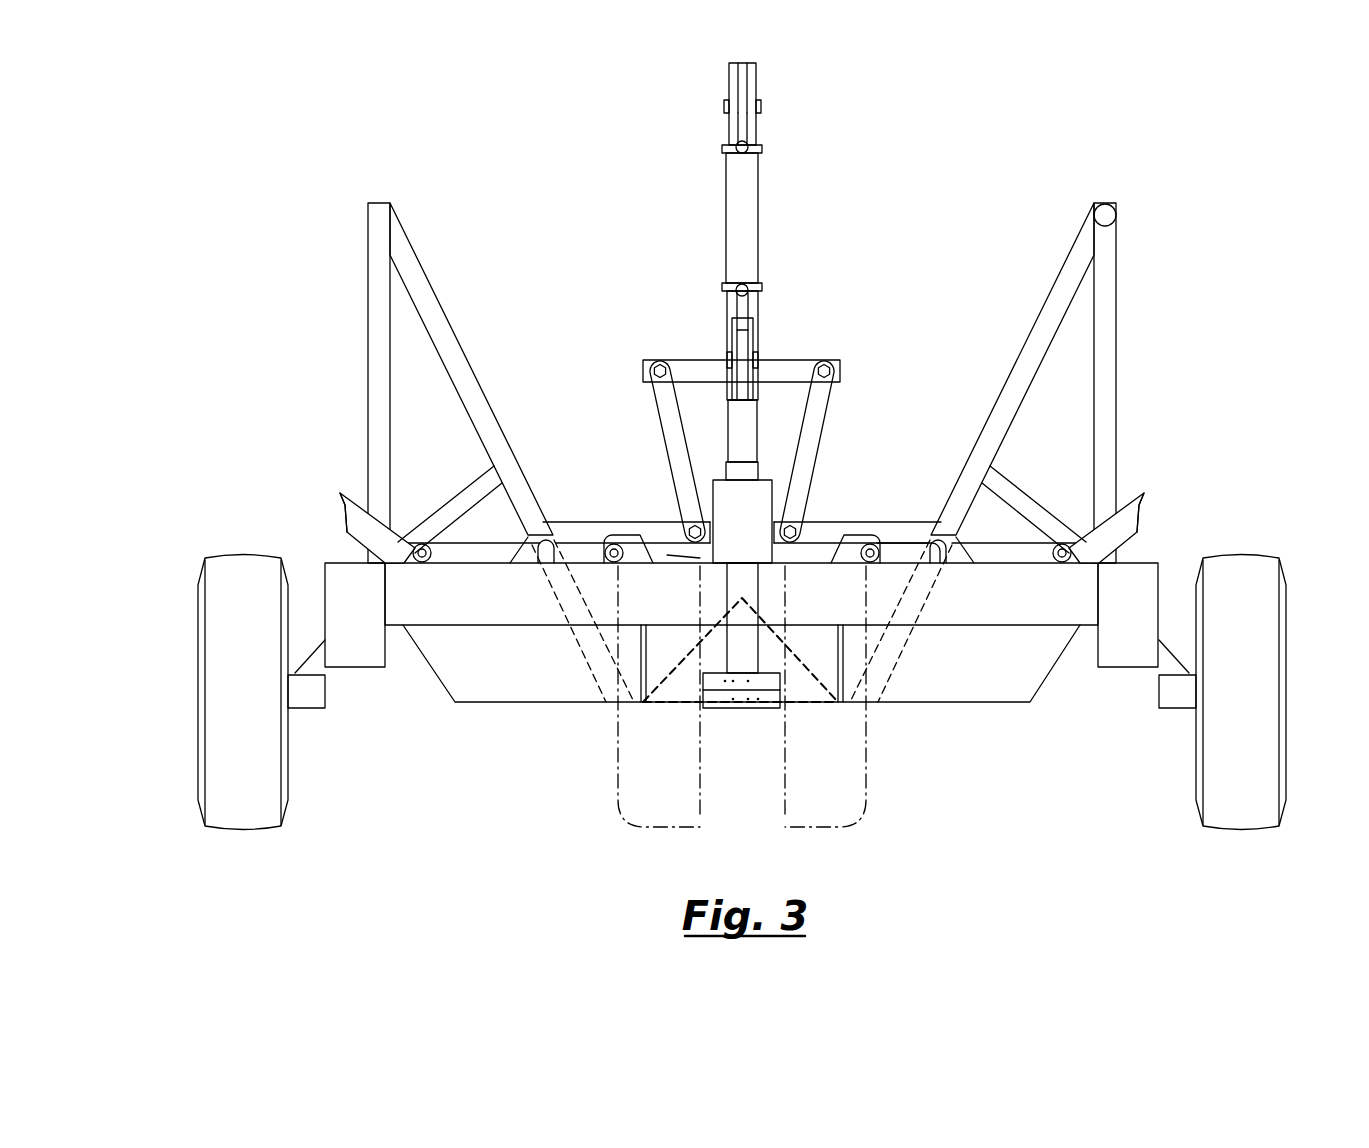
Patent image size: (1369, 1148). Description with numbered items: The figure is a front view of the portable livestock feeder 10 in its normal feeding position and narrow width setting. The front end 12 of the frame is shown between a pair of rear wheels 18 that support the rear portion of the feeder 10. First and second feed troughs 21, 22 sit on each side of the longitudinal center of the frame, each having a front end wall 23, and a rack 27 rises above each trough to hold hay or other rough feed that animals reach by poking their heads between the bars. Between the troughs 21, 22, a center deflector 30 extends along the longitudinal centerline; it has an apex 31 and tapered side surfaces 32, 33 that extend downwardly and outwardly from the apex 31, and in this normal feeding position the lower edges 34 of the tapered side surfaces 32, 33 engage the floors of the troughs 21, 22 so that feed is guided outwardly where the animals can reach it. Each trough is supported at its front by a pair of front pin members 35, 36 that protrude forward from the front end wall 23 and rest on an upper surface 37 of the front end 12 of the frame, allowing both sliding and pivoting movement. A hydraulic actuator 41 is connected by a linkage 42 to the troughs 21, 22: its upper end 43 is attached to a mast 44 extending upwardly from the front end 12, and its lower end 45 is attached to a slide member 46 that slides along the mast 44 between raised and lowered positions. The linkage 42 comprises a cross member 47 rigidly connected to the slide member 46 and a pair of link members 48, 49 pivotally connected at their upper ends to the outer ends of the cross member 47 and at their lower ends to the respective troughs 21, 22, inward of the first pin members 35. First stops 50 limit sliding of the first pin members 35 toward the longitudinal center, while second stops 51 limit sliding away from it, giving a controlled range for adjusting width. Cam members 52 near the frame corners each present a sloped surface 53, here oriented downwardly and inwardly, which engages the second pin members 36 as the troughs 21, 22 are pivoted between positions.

The portable livestock feeder 10 is at (208, 408).
The front end 12 is at (995, 602).
The rear wheels 18 is at (222, 650).
The first feed trough 21 is at (492, 678).
The second feed trough 22 is at (978, 688).
The front end wall 23 is at (452, 557).
The rack 27 is at (377, 272).
The center deflector 30 is at (643, 703).
The apex 31 is at (742, 598).
The tapered side surface 32 is at (680, 660).
The tapered side surface 33 is at (806, 661).
The lower edges 34 is at (670, 678).
The first pin member 35 is at (607, 542).
The second pin member 36 is at (418, 547).
The upper surface 37 is at (468, 563).
The hydraulic actuator 41 is at (737, 227).
The linkage 42 is at (705, 368).
The upper end 43 is at (733, 122).
The mast 44 is at (753, 87).
The lower end 45 is at (752, 337).
The slide member 46 is at (730, 392).
The cross member 47 is at (795, 368).
The link member 48 is at (810, 445).
The link member 49 is at (673, 447).
The first stops 50 is at (642, 535).
The second stops 51 is at (535, 560).
The cam member 52 is at (365, 535).
The sloped surface 53 is at (348, 492).